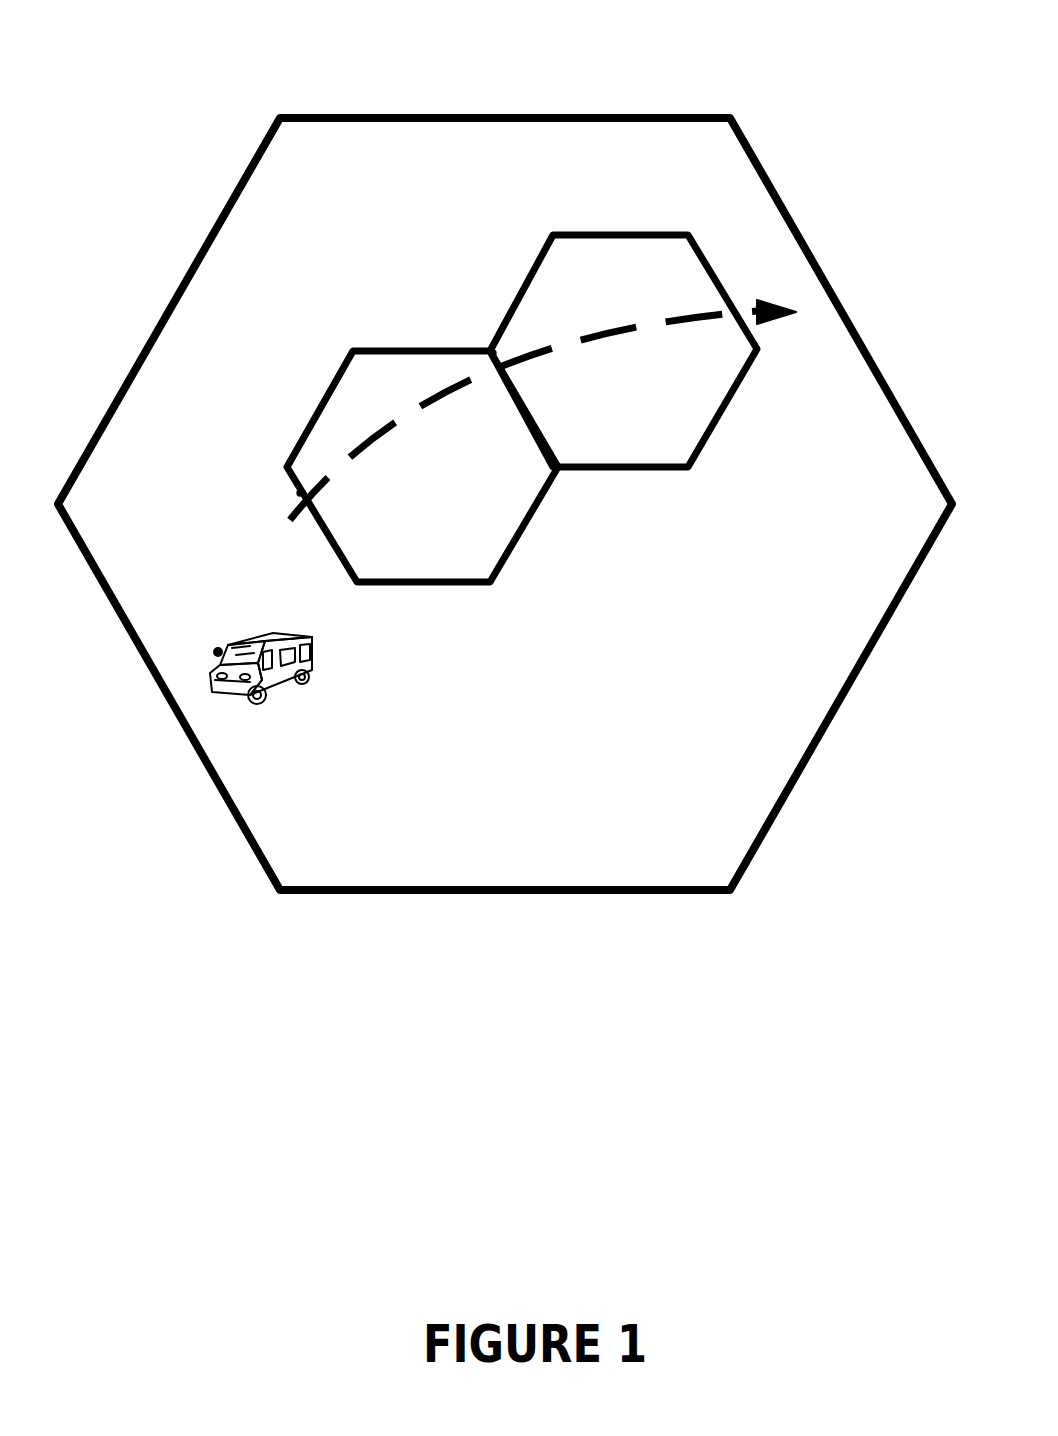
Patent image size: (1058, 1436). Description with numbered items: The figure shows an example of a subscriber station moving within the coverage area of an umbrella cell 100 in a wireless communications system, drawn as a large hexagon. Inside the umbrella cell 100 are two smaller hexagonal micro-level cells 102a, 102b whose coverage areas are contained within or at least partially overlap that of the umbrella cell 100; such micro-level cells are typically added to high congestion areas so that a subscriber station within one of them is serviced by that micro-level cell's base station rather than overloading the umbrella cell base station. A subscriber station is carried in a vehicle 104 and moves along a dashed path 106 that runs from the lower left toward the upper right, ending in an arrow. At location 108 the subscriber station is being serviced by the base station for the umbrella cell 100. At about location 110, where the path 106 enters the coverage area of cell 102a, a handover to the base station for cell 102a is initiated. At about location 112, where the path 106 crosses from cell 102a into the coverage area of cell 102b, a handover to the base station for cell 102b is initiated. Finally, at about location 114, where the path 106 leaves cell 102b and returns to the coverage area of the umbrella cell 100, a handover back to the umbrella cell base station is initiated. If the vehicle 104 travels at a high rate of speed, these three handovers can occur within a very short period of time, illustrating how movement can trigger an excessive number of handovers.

The umbrella cell 100 is at (350, 117).
The micro-level cell 102a is at (417, 348).
The micro-level cell 102b is at (620, 234).
The vehicle 104 is at (253, 640).
The path 106 is at (365, 434).
The location 108 is at (283, 548).
The location 110 is at (300, 493).
The location 112 is at (493, 353).
The location 114 is at (745, 322).